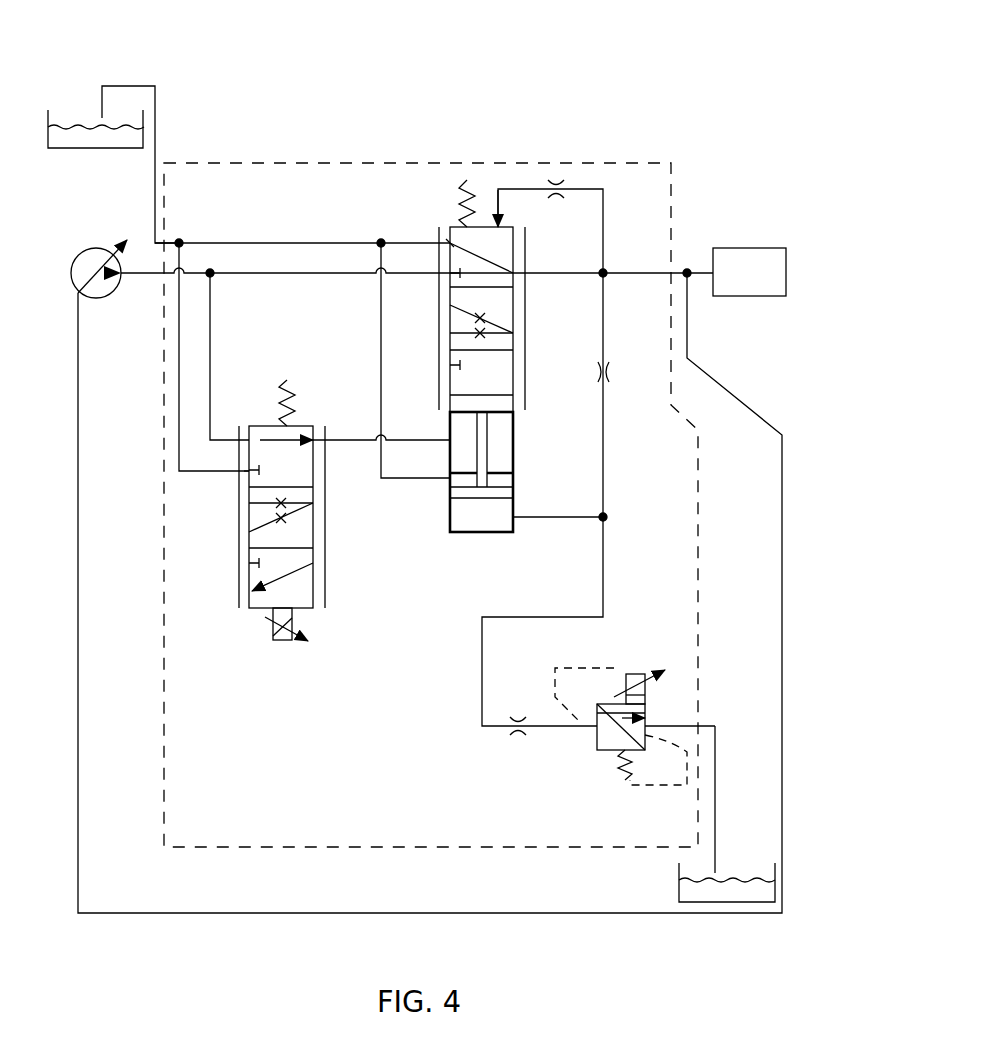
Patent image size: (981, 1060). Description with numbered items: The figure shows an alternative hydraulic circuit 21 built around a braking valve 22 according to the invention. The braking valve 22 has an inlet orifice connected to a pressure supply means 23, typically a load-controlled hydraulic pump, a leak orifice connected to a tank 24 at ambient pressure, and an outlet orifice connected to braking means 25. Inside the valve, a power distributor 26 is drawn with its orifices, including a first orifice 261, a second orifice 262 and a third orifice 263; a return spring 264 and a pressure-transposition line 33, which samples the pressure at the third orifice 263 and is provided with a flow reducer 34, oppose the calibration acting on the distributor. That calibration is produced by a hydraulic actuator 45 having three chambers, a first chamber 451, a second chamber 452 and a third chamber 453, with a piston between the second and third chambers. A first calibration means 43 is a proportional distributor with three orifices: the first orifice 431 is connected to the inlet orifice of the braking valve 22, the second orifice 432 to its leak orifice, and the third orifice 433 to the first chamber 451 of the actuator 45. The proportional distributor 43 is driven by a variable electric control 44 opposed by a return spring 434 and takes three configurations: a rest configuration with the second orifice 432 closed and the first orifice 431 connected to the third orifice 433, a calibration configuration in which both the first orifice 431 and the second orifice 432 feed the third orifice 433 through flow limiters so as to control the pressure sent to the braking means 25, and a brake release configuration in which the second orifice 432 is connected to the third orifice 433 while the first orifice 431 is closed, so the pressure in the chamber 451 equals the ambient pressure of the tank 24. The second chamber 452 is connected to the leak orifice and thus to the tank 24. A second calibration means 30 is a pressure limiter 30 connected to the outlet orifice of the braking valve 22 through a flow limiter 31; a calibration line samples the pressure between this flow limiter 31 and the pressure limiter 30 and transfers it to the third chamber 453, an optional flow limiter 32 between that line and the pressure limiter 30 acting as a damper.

The hydraulic system 21 is at (318, 100).
The braking valve 22 is at (434, 162).
The pressure supply means 23 is at (110, 296).
The tank 24 is at (72, 127).
The braking means 25 is at (758, 248).
The power distributor 26 is at (474, 258).
The inlet port of pressure control valve 261 is at (447, 243).
The first control line of pressure control valve 262 is at (440, 290).
The third orifice 263 is at (517, 278).
The return spring 264 is at (467, 180).
The pressure limiter 30 is at (598, 735).
The flow limiter 31 is at (612, 373).
The flow limiter 32 is at (518, 716).
The pressure-transposition line 33 is at (600, 187).
The flow reducer 34 is at (556, 178).
The first calibration means 43 is at (279, 462).
The first orifice 431 is at (241, 440).
The second orifice 432 is at (237, 476).
The third orifice 433 is at (320, 443).
The return spring 434 is at (288, 380).
The variable electric control 44 is at (283, 640).
The hydraulic actuator 45 is at (504, 495).
The first chamber 451 is at (500, 455).
The second chamber 452 is at (507, 484).
The third chamber 453 is at (500, 522).